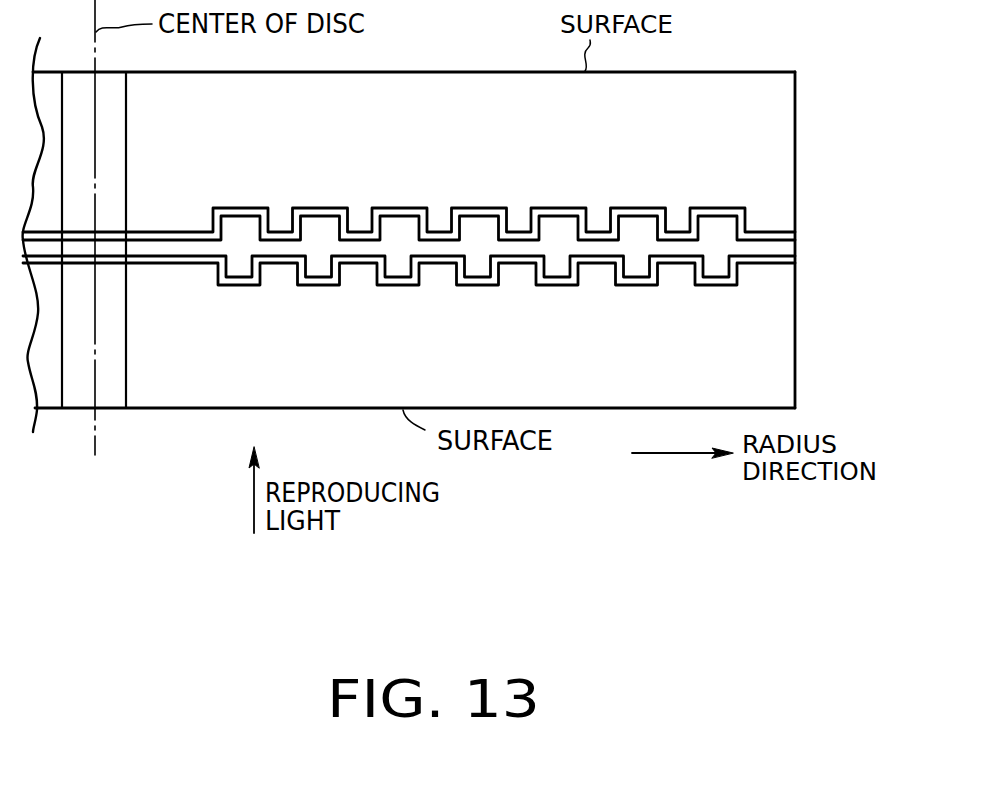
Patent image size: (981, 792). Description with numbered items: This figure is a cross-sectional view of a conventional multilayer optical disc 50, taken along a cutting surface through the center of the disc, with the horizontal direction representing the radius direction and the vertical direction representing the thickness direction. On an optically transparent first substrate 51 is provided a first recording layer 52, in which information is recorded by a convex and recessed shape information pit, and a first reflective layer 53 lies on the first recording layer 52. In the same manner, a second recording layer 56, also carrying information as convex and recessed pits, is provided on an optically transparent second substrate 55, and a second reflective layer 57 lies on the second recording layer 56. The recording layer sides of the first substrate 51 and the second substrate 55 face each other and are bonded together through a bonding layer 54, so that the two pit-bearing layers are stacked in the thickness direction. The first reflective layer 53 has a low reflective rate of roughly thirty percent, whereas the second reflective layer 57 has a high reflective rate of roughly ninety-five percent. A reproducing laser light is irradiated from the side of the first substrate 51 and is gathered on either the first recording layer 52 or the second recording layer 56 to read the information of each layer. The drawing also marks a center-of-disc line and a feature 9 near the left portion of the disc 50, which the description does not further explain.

The optical disc 50 is at (444, 295).
The first substrate 51 is at (783, 363).
The first recording layer 52 is at (645, 285).
The first reflective layer 53 is at (444, 308).
The bonding layer 54 is at (797, 247).
The second substrate 55 is at (783, 113).
The second recording layer 56 is at (649, 208).
The second reflective layer 57 is at (444, 187).
The clamp/track region boundary line 9 is at (113, 396).